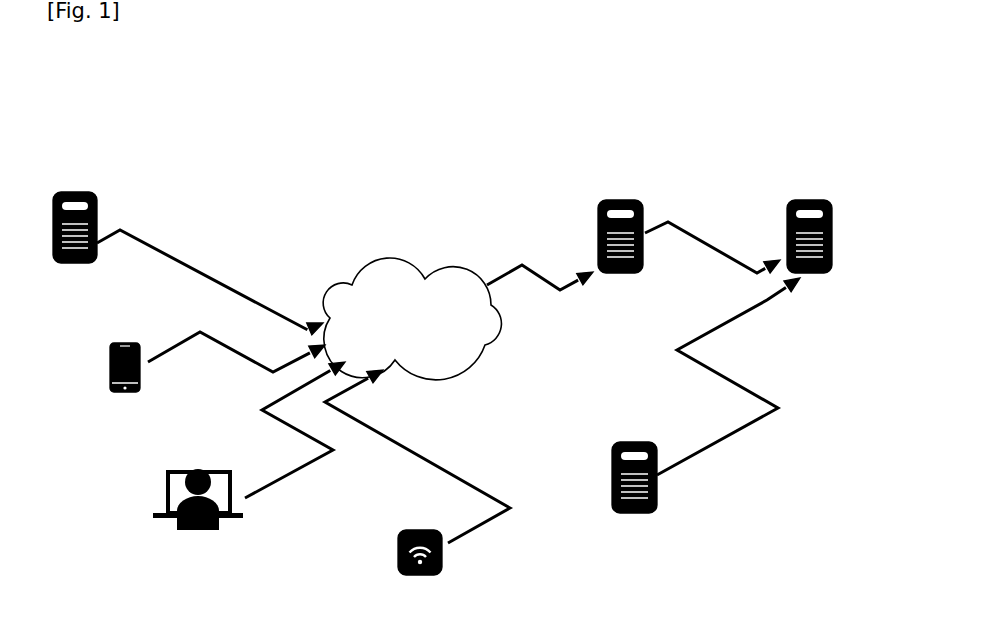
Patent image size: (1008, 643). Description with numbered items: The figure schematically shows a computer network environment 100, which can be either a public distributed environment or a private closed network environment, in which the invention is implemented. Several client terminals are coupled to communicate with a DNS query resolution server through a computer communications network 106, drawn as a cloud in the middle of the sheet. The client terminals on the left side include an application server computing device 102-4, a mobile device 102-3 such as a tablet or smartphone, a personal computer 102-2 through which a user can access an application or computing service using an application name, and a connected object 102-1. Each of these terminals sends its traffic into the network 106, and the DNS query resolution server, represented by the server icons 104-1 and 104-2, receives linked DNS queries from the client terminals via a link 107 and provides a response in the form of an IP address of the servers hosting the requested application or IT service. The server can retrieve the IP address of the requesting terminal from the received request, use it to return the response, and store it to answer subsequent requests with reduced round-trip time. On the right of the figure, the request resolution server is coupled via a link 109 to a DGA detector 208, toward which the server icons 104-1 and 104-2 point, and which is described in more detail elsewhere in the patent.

The computer network environment 100 is at (297, 203).
The connected object 102-1 is at (447, 567).
The personal computer 102-2 is at (175, 530).
The mobile device 102-3 is at (112, 388).
The application server computing device 102-4 is at (65, 180).
The DNS query resolution server 104-1 is at (658, 503).
The DNS query resolution server 104-2 is at (623, 190).
The computer communications network 106 is at (398, 265).
The link 107 is at (511, 262).
The link 109 is at (737, 255).
The DGA detector 208 is at (832, 278).